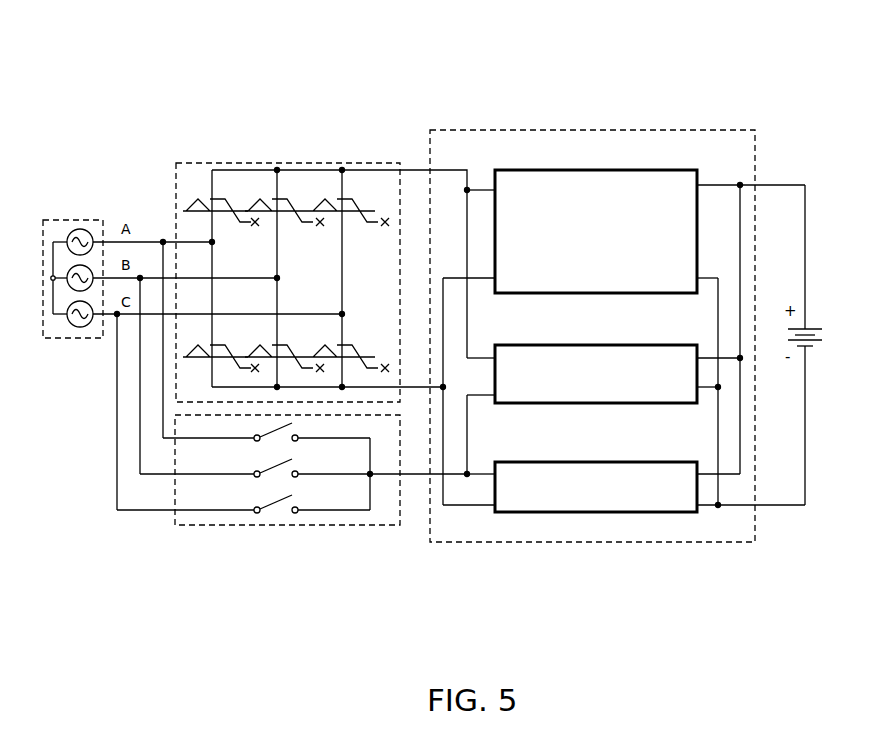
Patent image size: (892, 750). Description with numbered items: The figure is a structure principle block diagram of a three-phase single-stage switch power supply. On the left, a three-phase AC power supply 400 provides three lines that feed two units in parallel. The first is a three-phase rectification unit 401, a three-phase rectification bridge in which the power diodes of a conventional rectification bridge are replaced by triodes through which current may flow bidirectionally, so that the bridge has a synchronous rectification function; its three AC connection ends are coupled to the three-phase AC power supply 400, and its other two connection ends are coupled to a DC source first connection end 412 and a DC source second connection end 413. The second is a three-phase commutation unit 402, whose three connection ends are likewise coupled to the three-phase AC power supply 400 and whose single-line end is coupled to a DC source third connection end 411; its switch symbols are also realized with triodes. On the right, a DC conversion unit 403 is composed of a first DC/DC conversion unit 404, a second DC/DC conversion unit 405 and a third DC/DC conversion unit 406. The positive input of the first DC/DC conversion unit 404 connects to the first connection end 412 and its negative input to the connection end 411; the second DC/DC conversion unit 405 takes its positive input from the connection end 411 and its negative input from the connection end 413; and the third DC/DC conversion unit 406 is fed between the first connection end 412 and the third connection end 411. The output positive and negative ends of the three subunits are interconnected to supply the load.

The three-phase AC power supply 400 is at (100, 239).
The three-phase rectification unit 401 is at (321, 240).
The three-phase commutation unit 402 is at (292, 507).
The DC conversion unit 403 is at (617, 313).
The first DC/DC conversion unit 404 is at (596, 396).
The second DC/DC conversion unit 405 is at (598, 519).
The third DC/DC conversion unit 406 is at (630, 190).
The DC source third connection end 411 is at (506, 534).
The DC source first connection end 412 is at (517, 112).
The DC source second connection end 413 is at (445, 390).